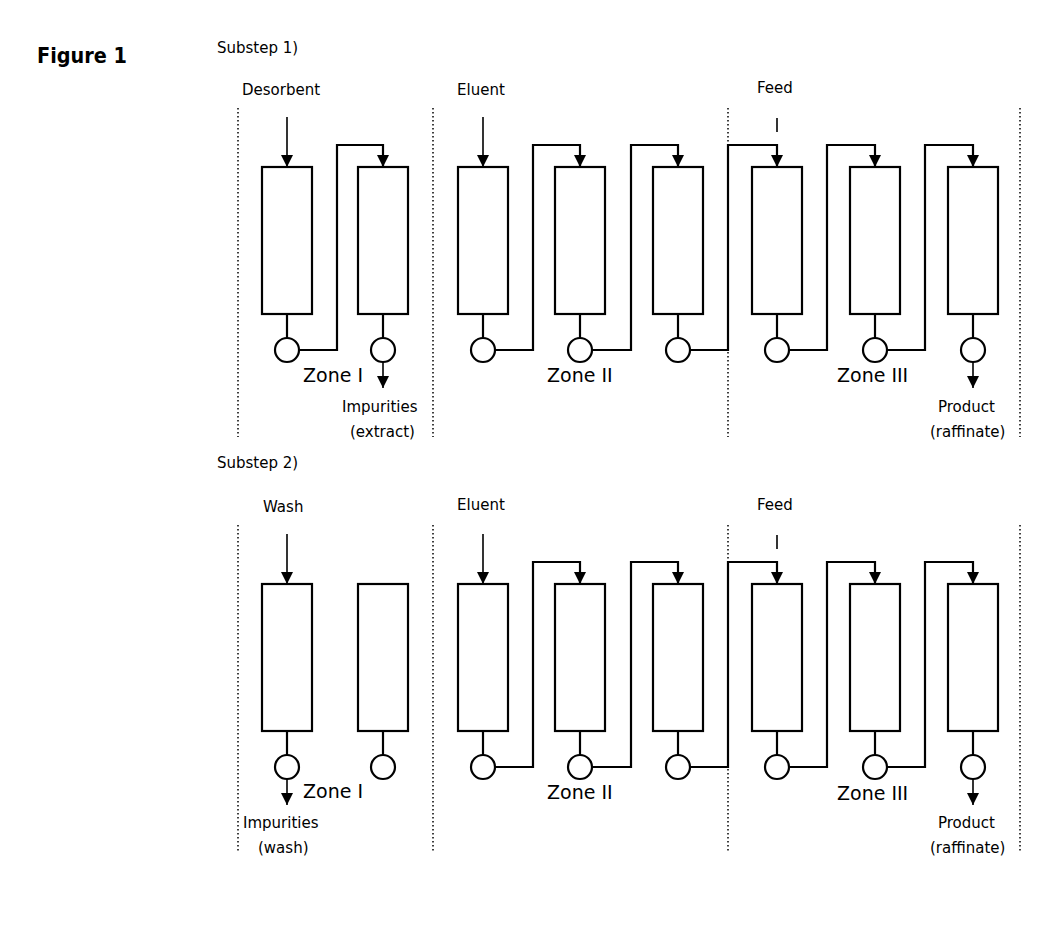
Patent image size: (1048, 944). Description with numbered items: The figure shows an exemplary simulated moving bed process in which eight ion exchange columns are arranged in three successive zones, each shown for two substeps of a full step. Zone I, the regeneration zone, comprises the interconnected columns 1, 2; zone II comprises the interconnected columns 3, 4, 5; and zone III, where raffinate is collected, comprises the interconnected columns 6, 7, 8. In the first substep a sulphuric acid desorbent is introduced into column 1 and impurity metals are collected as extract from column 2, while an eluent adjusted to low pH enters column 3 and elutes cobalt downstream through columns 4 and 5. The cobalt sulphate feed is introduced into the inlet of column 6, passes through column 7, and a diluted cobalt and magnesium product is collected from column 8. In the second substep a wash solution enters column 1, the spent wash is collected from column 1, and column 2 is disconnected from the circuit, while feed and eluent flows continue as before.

The column 1 is at (287, 473).
The column 2 is at (383, 473).
The column 3 is at (483, 473).
The column 4 is at (580, 473).
The column 5 is at (678, 473).
The column 6 is at (777, 473).
The column 7 is at (875, 473).
The column 8 is at (973, 473).